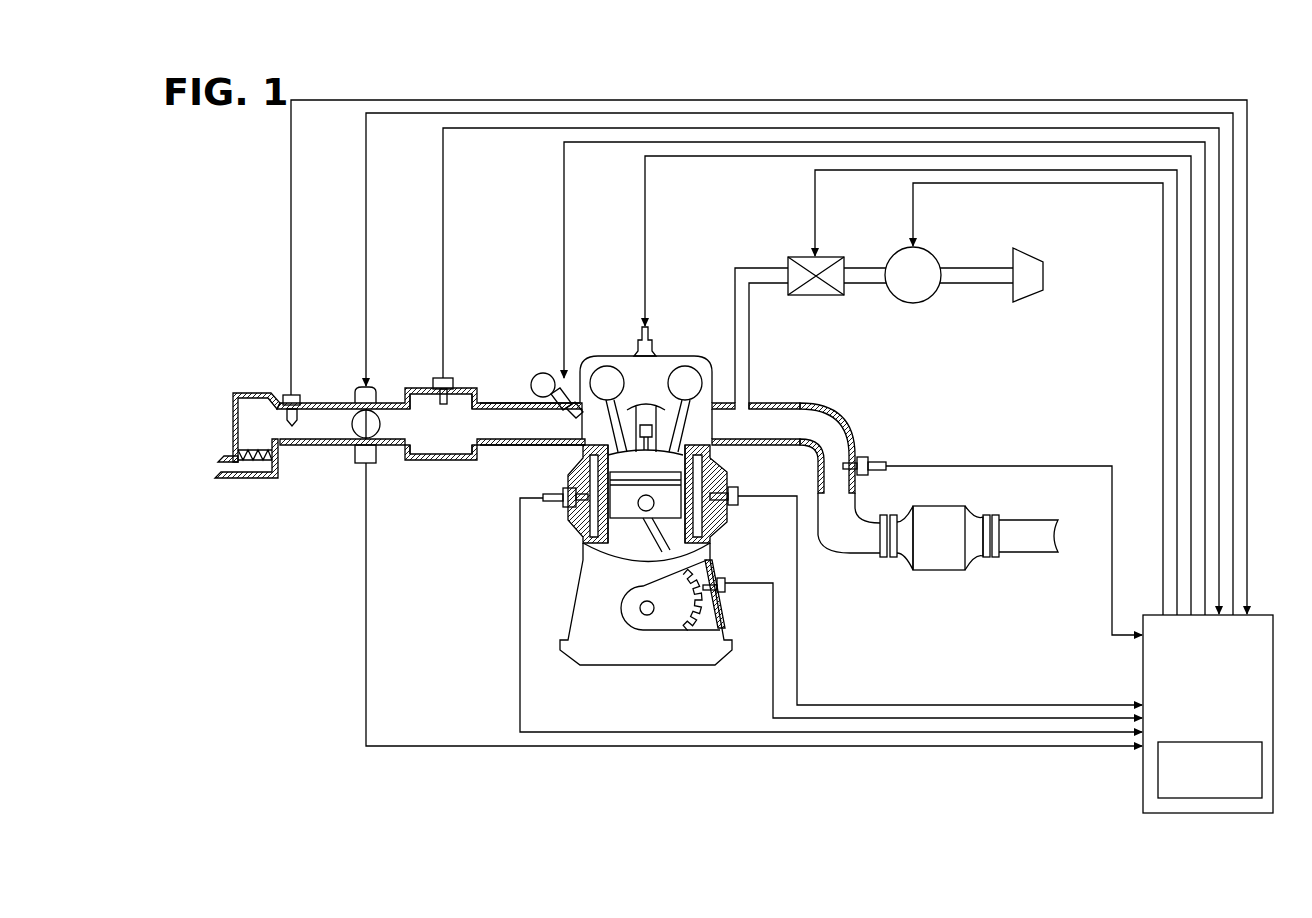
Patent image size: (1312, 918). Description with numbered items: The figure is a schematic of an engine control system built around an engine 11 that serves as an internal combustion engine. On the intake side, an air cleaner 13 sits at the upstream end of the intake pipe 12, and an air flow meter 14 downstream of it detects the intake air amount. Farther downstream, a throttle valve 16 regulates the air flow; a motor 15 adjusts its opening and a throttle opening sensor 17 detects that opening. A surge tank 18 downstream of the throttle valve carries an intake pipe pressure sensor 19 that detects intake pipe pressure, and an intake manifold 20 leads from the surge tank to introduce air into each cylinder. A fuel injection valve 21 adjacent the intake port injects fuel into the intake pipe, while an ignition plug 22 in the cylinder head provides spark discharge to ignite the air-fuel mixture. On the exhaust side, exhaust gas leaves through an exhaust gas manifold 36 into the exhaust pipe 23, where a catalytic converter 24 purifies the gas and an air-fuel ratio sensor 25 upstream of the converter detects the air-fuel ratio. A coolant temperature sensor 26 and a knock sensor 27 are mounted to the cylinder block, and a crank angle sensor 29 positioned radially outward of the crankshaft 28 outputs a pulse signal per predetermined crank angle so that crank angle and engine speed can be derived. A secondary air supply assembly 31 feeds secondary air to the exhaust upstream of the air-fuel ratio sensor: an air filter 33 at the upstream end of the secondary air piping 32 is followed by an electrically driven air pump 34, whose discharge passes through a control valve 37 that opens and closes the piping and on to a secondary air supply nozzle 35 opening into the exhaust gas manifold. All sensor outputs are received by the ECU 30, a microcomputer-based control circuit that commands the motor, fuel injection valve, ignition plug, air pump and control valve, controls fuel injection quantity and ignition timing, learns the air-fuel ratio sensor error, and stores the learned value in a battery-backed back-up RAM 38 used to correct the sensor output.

The engine 11 is at (696, 355).
The intake pipe 12 is at (318, 401).
The air cleaner 13 is at (240, 463).
The air flow meter 14 is at (288, 397).
The motor 15 is at (355, 387).
The throttle valve 16 is at (355, 427).
The throttle opening sensor 17 is at (376, 463).
The surge tank 18 is at (442, 461).
The intake pipe pressure sensor 19 is at (436, 388).
The intake manifold 20 is at (500, 402).
The fuel injection valve 21 is at (572, 368).
The ignition plug 22 is at (660, 355).
The exhaust pipe 23 is at (842, 412).
The catalytic converter 24 is at (940, 506).
The air-fuel ratio sensor 25 is at (868, 456).
The coolant temperature sensor 26 is at (566, 508).
The knock sensor 27 is at (735, 507).
The crankshaft 28 is at (648, 616).
The crank angle sensor 29 is at (727, 592).
The control circuit (ECU) 30 is at (1143, 670).
The secondary air supply assembly 31 is at (781, 255).
The secondary air piping 32 is at (862, 267).
The air filter 33 is at (1028, 250).
The air pump 34 is at (918, 303).
The secondary air supply nozzle 35 is at (750, 330).
The exhaust gas manifold 36 is at (768, 403).
The control valve 37 is at (822, 297).
The back-up RAM 38 is at (1158, 772).